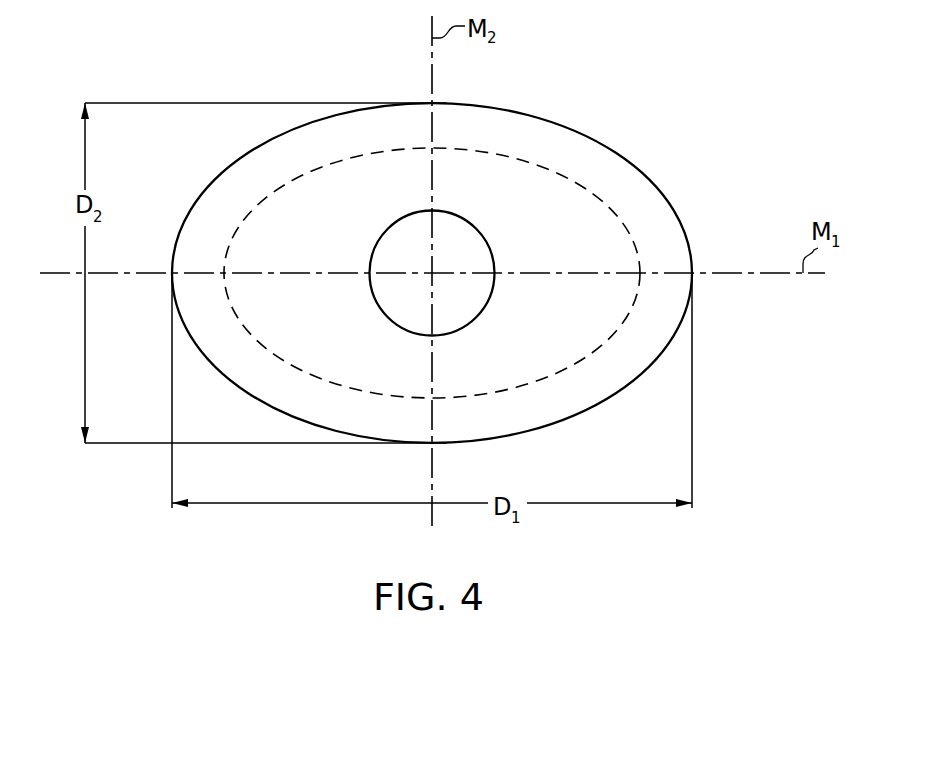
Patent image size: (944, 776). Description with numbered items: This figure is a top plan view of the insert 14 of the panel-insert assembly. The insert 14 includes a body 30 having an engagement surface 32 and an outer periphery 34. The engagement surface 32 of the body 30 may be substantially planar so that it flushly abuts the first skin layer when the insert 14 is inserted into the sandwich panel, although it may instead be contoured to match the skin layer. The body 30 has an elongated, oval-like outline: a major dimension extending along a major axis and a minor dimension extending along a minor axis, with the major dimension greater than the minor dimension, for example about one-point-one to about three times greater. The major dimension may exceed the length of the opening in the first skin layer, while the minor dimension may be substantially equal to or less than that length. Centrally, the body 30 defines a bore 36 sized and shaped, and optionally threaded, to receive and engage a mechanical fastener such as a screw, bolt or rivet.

The insert 14 is at (454, 258).
The body 30 is at (669, 203).
The engagement surface 32 is at (356, 346).
The outer periphery 34 is at (599, 405).
The bore 36 is at (454, 217).